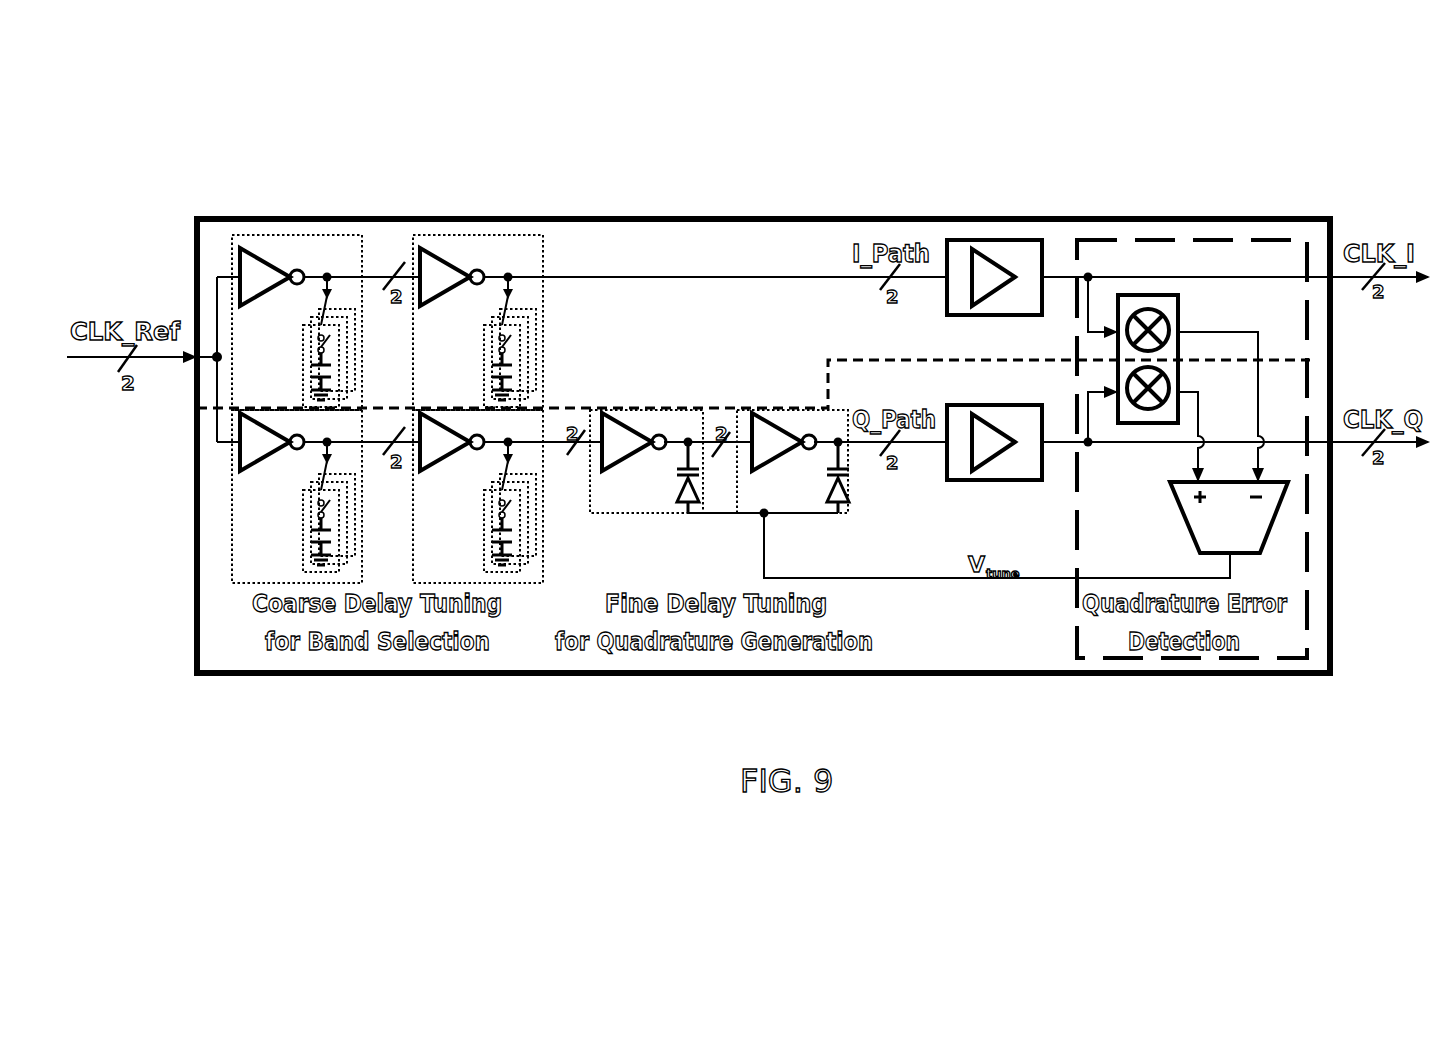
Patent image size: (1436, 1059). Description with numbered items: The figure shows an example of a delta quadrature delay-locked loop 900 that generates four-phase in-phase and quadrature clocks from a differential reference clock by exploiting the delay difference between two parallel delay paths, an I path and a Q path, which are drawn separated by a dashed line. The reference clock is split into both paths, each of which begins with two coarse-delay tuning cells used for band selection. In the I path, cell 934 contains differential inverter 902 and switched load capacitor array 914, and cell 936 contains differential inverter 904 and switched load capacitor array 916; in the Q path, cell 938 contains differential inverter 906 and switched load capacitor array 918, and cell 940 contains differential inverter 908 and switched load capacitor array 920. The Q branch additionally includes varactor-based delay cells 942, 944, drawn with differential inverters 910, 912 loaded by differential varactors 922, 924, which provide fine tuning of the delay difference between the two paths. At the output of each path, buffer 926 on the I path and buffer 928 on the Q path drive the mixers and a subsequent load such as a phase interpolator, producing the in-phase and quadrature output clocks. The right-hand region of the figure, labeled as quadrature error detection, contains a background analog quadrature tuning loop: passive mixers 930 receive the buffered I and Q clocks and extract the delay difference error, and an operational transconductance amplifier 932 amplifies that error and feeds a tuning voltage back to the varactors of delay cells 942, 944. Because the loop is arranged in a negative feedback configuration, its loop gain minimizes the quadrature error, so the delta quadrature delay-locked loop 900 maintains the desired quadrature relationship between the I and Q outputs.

The delta quadrature delay-locked loop 900 is at (1305, 153).
The differential inverter 902 is at (279, 286).
The differential inverter 904 is at (459, 286).
The differential inverter 906 is at (279, 452).
The differential inverter 908 is at (459, 452).
The differential inverter 910 is at (623, 463).
The differential inverter 912 is at (775, 461).
The switched load capacitor array 914 is at (302, 360).
The switched load capacitor array 916 is at (483, 360).
The switched load capacitor array 918 is at (302, 535).
The switched load capacitor array 920 is at (483, 535).
The differential varactor 922 is at (682, 498).
The differential varactor 924 is at (843, 500).
The buffer 926 is at (947, 298).
The buffer 928 is at (947, 472).
The passive mixer 930 is at (1180, 318).
The operational transconductance amplifier 932 is at (1185, 523).
The coarse-delay tuning cell 934 is at (268, 233).
The coarse-delay tuning cell 936 is at (440, 233).
The coarse-delay tuning cell 938 is at (250, 587).
The coarse-delay tuning cell 940 is at (543, 563).
The varactor-based delay cell 942 is at (707, 427).
The varactor-based delay cell 944 is at (837, 412).